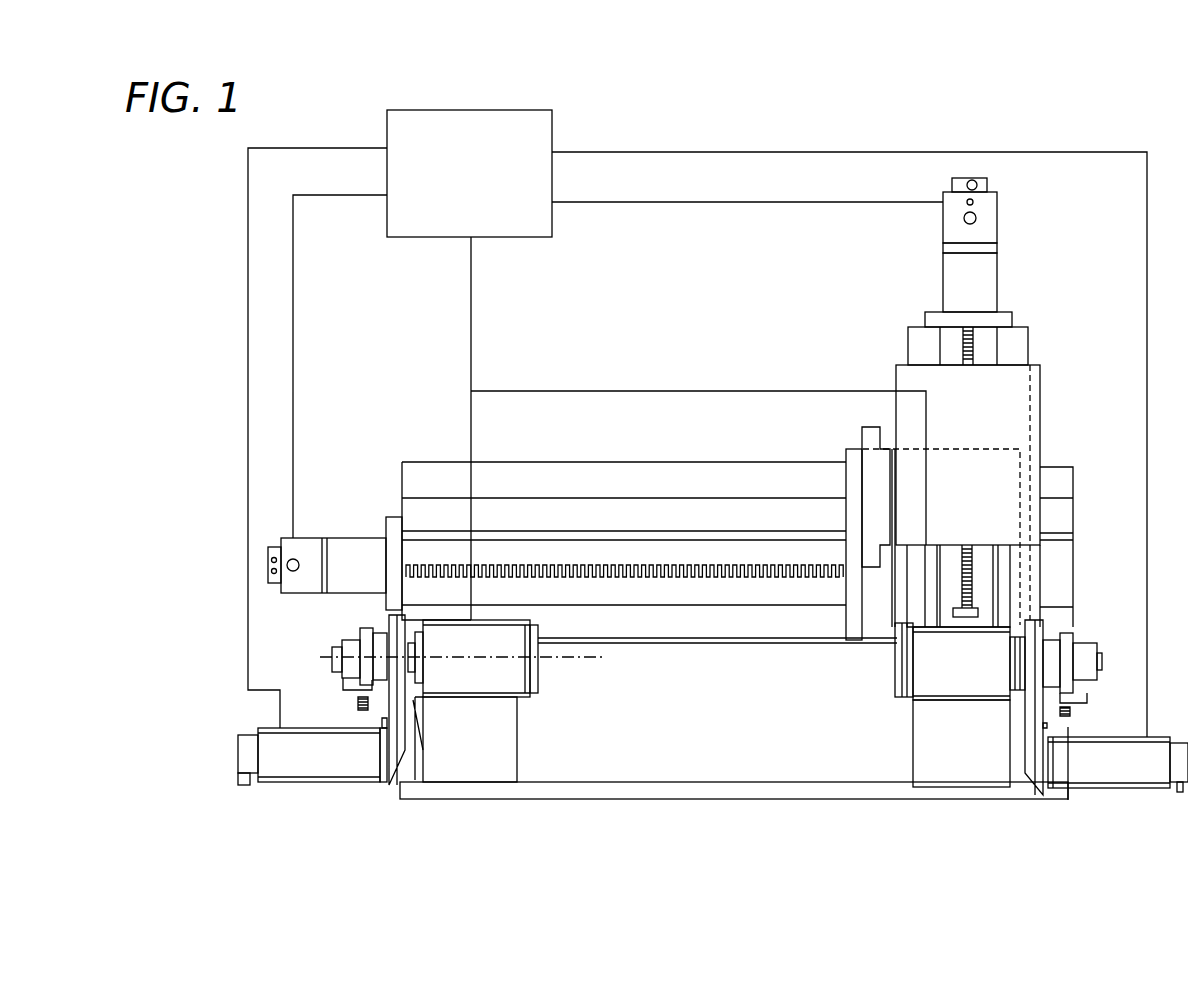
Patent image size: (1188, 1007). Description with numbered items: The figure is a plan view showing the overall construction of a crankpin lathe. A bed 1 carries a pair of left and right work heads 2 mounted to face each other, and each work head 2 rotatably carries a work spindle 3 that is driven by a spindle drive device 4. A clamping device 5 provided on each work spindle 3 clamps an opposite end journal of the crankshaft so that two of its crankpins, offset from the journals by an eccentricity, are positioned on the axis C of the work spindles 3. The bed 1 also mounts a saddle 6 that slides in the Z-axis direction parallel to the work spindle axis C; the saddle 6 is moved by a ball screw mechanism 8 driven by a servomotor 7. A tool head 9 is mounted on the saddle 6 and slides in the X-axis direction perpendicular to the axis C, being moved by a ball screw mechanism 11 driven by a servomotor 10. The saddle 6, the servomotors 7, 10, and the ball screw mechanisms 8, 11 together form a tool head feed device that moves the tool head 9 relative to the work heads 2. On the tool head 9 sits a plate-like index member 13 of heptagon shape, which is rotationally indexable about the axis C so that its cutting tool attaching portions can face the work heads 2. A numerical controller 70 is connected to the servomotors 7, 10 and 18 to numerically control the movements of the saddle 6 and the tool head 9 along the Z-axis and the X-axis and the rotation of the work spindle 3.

The bed 1 is at (427, 478).
The work head 2 is at (472, 765).
The work spindle 3 is at (525, 692).
The spindle drive device 4 is at (376, 722).
The clamping device 5 is at (538, 668).
The saddle 6 is at (1010, 585).
The servomotor 7 is at (350, 560).
The ball screw mechanism 8 is at (555, 560).
The tool head 9 is at (1010, 410).
The servomotor 10 is at (985, 284).
The ball screw mechanism 11 is at (975, 340).
The index member 13 is at (868, 427).
The servomotor 18 is at (322, 770).
The numerical controller 70 is at (521, 110).
The work spindle axis C is at (588, 655).